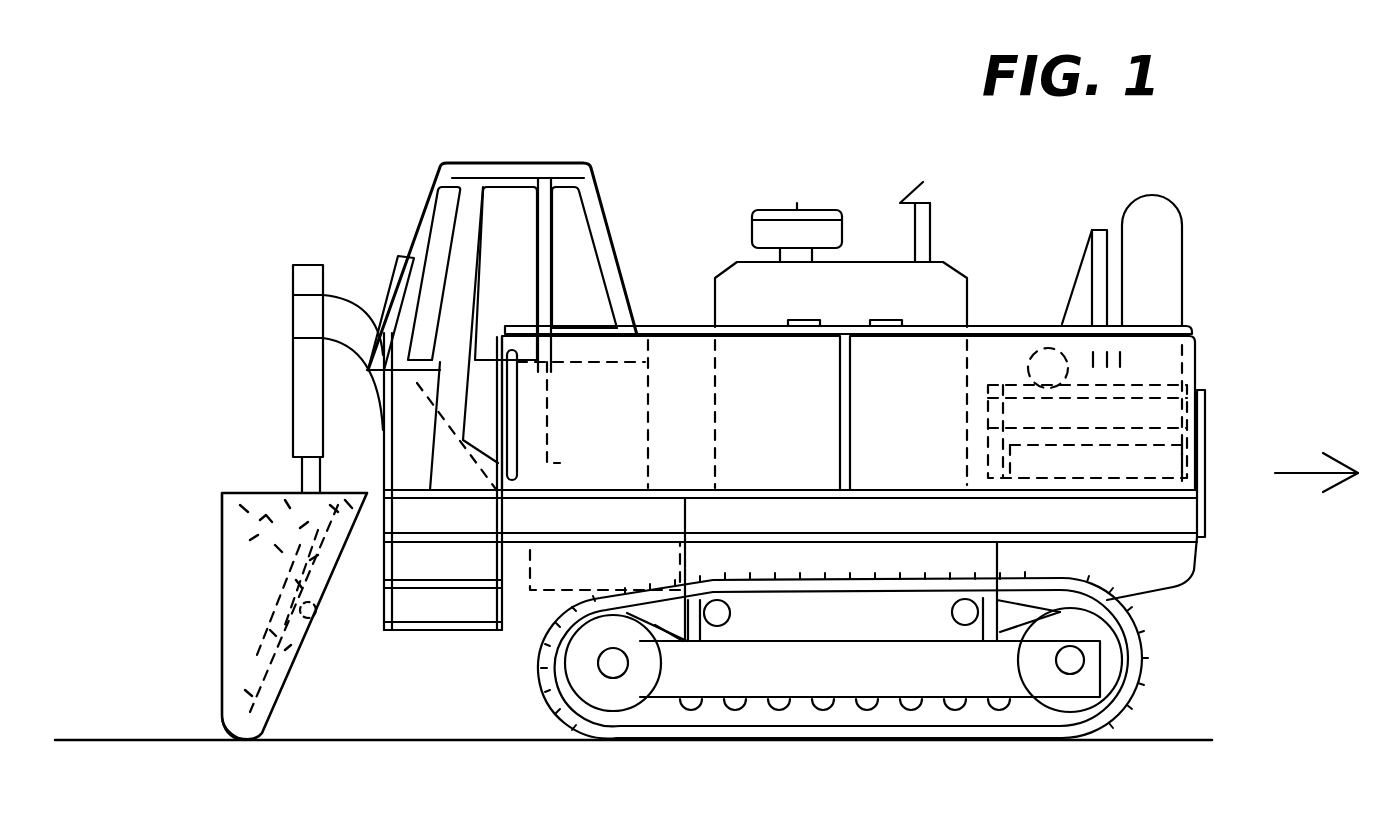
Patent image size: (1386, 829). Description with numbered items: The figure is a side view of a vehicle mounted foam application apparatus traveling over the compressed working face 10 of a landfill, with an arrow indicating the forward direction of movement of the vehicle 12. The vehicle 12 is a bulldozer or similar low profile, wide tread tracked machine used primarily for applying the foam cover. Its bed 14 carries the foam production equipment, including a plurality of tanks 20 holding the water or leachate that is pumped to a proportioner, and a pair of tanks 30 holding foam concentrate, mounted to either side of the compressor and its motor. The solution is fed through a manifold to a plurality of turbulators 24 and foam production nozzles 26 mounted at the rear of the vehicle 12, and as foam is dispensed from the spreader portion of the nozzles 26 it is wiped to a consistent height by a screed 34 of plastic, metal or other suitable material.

The landfill working face 10 is at (123, 740).
The vehicle 12 is at (562, 133).
The bed 14 is at (1182, 515).
The tanks 20 is at (663, 350).
The turbulators 24 is at (275, 613).
The foam production nozzles 26 is at (240, 695).
The foam concentrate tanks 30 is at (1157, 465).
The screed 34 is at (200, 732).